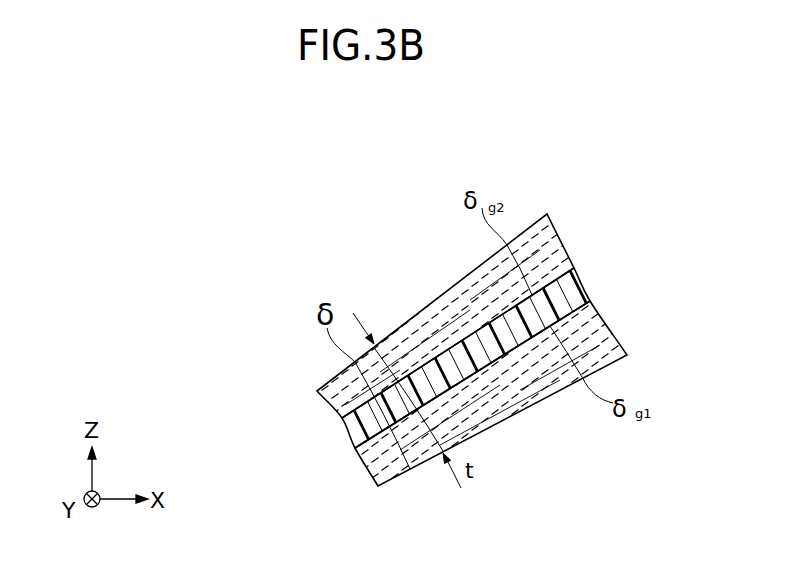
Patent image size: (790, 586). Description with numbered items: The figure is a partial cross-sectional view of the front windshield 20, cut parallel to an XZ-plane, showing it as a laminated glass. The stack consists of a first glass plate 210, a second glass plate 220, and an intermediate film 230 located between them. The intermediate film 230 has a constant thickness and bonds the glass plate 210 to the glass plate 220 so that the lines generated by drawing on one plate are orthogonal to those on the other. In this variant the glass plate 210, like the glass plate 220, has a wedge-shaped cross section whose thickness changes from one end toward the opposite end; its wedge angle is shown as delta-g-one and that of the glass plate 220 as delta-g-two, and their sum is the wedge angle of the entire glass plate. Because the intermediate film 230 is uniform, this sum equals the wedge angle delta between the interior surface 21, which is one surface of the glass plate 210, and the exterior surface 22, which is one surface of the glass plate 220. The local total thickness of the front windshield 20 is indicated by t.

The front windshield 20 is at (569, 180).
The interior surface 21 is at (547, 396).
The exterior surface 22 is at (457, 284).
The glass plate 210 is at (603, 334).
The glass plate 220 is at (563, 238).
The intermediate film 230 is at (587, 282).